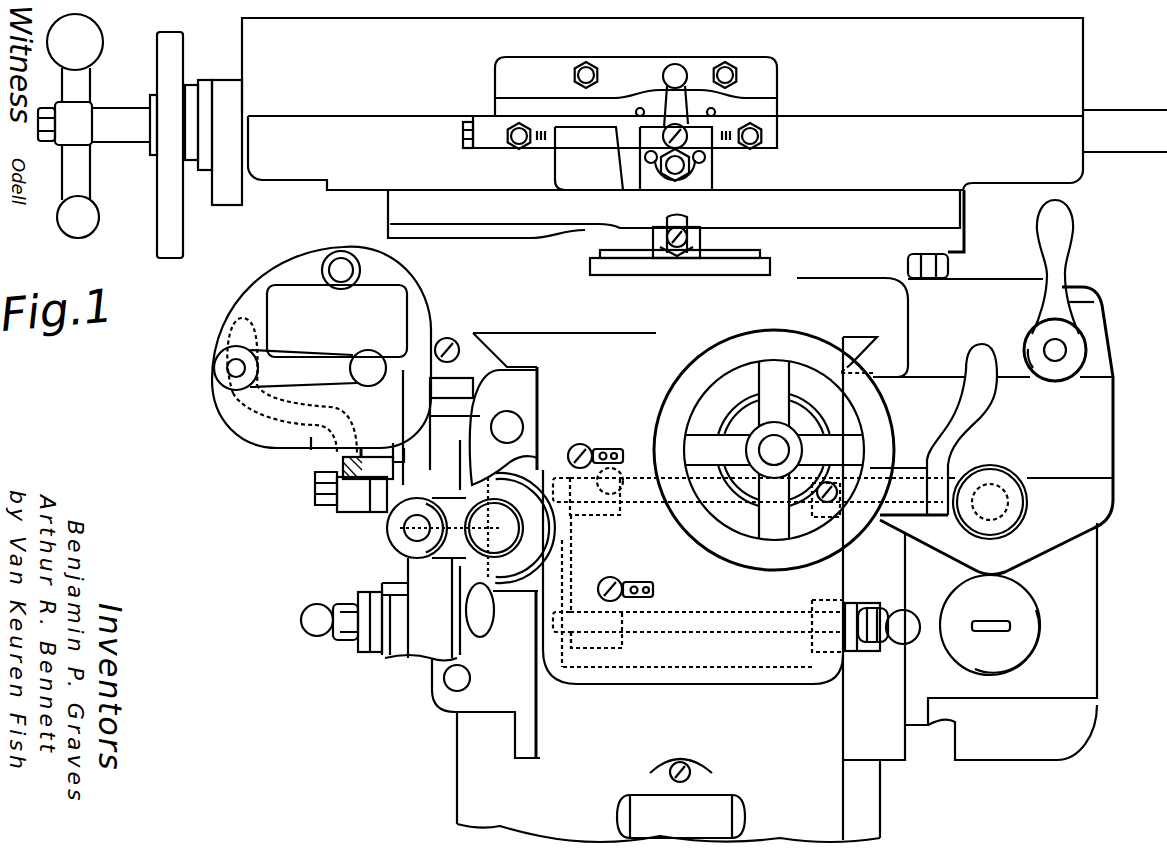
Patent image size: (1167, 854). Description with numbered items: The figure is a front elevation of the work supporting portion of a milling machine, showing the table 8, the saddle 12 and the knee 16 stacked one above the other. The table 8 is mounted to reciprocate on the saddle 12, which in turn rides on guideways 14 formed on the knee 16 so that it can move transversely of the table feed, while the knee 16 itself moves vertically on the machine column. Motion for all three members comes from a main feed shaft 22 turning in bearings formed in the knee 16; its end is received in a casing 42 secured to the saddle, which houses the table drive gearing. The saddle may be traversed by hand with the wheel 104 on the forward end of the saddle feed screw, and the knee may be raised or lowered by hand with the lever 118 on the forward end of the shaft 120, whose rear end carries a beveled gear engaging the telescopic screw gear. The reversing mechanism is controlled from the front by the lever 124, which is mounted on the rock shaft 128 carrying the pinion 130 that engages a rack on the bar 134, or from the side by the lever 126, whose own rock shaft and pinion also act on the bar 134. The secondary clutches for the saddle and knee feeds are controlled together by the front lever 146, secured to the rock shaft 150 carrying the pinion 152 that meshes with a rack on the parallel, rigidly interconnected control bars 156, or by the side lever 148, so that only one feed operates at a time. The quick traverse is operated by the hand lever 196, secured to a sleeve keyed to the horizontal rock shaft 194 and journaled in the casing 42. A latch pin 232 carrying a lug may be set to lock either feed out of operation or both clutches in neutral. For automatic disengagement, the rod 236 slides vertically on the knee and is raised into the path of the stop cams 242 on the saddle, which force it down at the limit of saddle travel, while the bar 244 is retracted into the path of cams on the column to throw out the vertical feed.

The table 8 is at (704, 104).
The saddle 12 is at (742, 515).
The guideways 14 is at (500, 344).
The knee 16 is at (668, 776).
The main feed shaft 22 is at (1010, 504).
The casing 42 is at (1106, 404).
The wheel 104 is at (778, 324).
The lever 118 is at (413, 653).
The shaft 120 is at (410, 529).
The lever 124 is at (980, 419).
The lever 126 is at (254, 417).
The rock shaft 128 is at (653, 503).
The pinion 130 is at (600, 514).
The bar 134 is at (573, 446).
The lever 146 is at (889, 611).
The lever 148 is at (318, 610).
The rock shaft 150 is at (717, 609).
The pinion 152 is at (620, 643).
The control bars 156 is at (618, 476).
The rock shaft 194 is at (1064, 349).
The hand lever 196 is at (1064, 259).
The latch pin 232 is at (345, 462).
The rod 236 is at (427, 407).
The stop cams 242 is at (430, 392).
The bar 244 is at (463, 684).